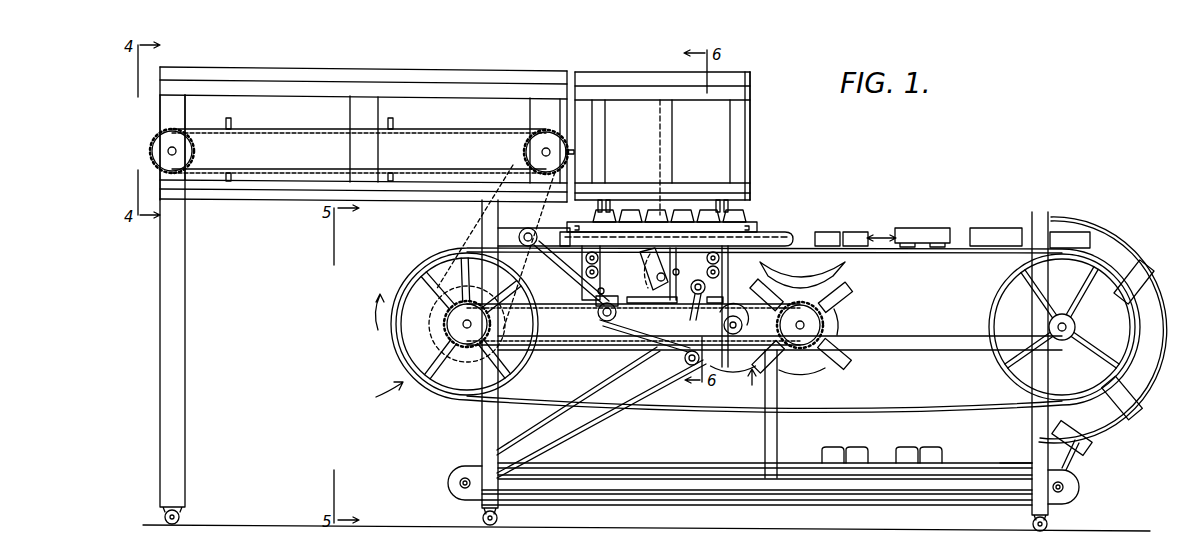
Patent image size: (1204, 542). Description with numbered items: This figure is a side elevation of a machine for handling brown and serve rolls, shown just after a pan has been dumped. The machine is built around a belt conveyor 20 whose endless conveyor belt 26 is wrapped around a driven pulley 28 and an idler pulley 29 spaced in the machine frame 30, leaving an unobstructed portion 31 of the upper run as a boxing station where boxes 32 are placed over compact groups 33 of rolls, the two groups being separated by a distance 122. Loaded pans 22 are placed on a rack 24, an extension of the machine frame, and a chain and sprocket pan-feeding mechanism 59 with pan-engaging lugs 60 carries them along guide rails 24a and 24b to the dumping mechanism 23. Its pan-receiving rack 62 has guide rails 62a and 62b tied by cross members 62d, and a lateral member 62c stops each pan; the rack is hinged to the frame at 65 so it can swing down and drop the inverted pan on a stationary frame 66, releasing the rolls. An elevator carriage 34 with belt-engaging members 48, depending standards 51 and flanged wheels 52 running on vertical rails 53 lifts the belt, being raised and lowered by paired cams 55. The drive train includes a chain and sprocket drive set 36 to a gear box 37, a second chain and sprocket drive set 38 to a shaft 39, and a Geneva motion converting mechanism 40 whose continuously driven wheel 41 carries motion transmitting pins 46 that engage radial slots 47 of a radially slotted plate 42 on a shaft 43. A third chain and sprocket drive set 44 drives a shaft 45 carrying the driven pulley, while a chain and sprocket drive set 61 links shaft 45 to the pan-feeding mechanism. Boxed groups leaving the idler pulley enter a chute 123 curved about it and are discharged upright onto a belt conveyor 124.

The belt conveyor 20 is at (382, 394).
The pans 22 is at (695, 210).
The dumping mechanism 23 is at (759, 68).
The rack 24 is at (343, 62).
The guide rail 24a is at (438, 75).
The guide rail 24b is at (252, 186).
The conveyor belt 26 is at (450, 255).
The driven pulley 28 is at (420, 288).
The idler pulley 29 is at (993, 290).
The machine frame 30 is at (482, 428).
The unobstructed portion 31 is at (800, 240).
The boxes 32 is at (928, 230).
The compact groups 33 is at (840, 232).
The elevator carriage 34 is at (600, 258).
The chain and sprocket drive set 36 is at (660, 297).
The gear box 37 is at (598, 340).
The second chain and sprocket drive set 38 is at (638, 348).
The shaft 39 is at (735, 315).
The motion converting mechanism 40 is at (753, 381).
The continuously driven wheel 41 is at (733, 365).
The radially slotted plate 42 is at (840, 318).
The shaft 43 is at (800, 345).
The third chain and sprocket drive set 44 is at (560, 345).
The shaft 45 is at (455, 322).
The motion transmitting pins 46 is at (698, 295).
The radial slots 47 is at (835, 283).
The belt-engaging members 48 is at (650, 262).
The depending standards 51 is at (603, 290).
The flanged wheels 52 is at (600, 272).
The vertical rails 53 is at (575, 270).
The cams 55 is at (716, 258).
The pan-feeding mechanism 59 is at (312, 120).
The pan-engaging lugs 60 is at (253, 120).
The chain and sprocket drive set 61 is at (480, 232).
The pan-receiving rack 62 is at (608, 60).
The guide rail 62a is at (645, 75).
The guide rail 62b is at (637, 185).
The lateral member 62c is at (752, 140).
The cross members 62d is at (658, 125).
The hinge 65 is at (602, 205).
The stationary frame 66 is at (758, 226).
The distance 122 is at (882, 232).
The chute 123 is at (1160, 345).
The belt conveyor 124 is at (1000, 463).